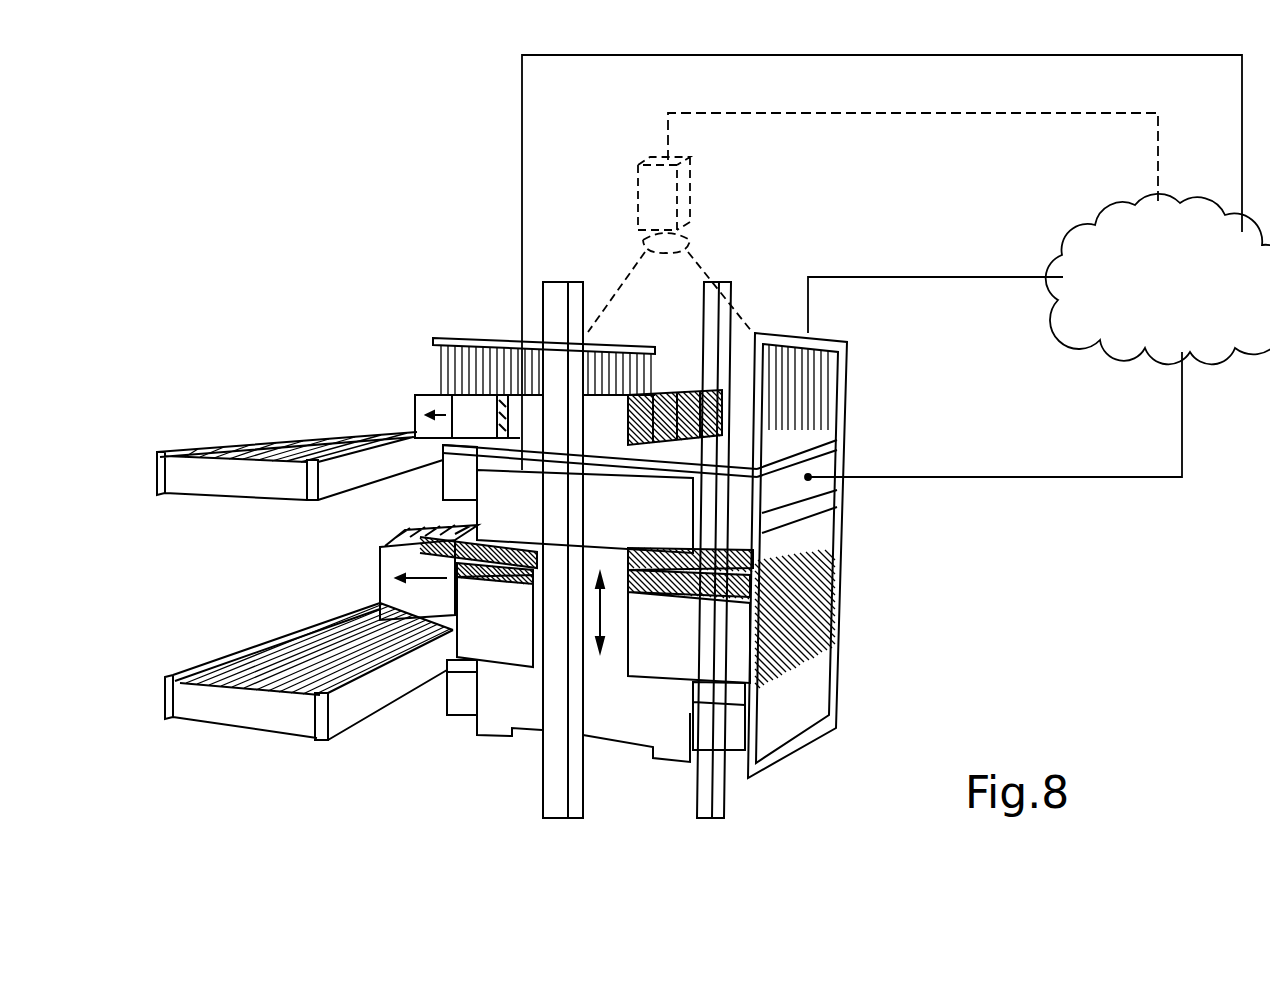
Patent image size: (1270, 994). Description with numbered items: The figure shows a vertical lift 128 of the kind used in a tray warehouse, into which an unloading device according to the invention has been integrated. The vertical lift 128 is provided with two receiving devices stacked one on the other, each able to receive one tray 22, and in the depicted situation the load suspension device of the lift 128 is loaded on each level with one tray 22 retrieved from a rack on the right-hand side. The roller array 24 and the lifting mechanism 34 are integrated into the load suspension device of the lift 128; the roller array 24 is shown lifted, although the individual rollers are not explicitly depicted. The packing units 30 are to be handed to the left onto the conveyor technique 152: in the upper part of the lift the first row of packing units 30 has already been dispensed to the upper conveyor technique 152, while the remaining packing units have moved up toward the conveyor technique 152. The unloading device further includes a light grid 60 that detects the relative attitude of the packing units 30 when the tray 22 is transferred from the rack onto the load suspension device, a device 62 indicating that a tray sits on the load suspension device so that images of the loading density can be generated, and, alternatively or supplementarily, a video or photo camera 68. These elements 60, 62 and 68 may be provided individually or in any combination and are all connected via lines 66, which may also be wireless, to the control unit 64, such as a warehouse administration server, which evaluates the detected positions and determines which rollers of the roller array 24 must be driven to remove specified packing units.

The tray 22 is at (468, 450).
The roller array 24 is at (648, 675).
The lifting mechanism 34 is at (733, 485).
The packing units 30 is at (415, 410).
The light grid 60 is at (850, 453).
The device 62 is at (487, 332).
The control unit 64 is at (1207, 303).
The lines 66 is at (965, 113).
The video or photo camera 68 is at (690, 197).
The vertical lift 128 is at (490, 757).
The conveyor technique 152 is at (243, 434).